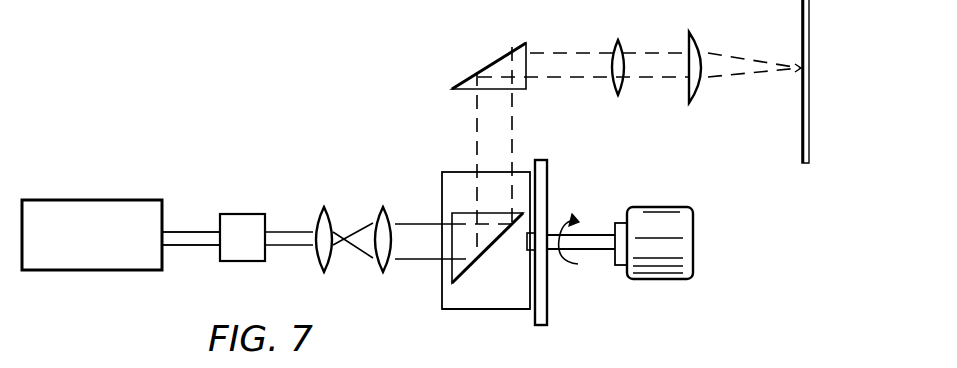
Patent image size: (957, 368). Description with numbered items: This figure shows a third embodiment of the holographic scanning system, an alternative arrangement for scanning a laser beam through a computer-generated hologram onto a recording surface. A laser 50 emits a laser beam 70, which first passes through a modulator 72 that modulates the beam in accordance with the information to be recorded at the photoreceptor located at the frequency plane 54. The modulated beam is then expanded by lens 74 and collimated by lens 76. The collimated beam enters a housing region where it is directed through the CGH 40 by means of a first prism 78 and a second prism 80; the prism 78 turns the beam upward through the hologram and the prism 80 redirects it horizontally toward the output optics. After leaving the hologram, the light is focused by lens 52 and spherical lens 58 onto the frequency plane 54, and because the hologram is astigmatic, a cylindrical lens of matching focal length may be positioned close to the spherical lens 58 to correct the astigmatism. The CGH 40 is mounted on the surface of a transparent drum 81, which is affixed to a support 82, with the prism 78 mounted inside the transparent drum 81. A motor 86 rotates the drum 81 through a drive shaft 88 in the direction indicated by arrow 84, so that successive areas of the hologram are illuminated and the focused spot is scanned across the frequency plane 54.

The CGH 40 is at (525, 172).
The laser 50 is at (128, 200).
The lens 52 is at (620, 40).
The frequency plane 54 is at (802, 87).
The spherical lens 58 is at (692, 36).
The laser beam 70 is at (193, 232).
The modulator 72 is at (243, 214).
The lens 74 is at (320, 210).
The lens 76 is at (381, 210).
The prism 78 is at (452, 250).
The prism 80 is at (491, 61).
The transparent drum 81 is at (442, 297).
The support 82 is at (547, 312).
The arrow 84 is at (563, 219).
The motor 86 is at (689, 208).
The drive shaft 88 is at (597, 250).